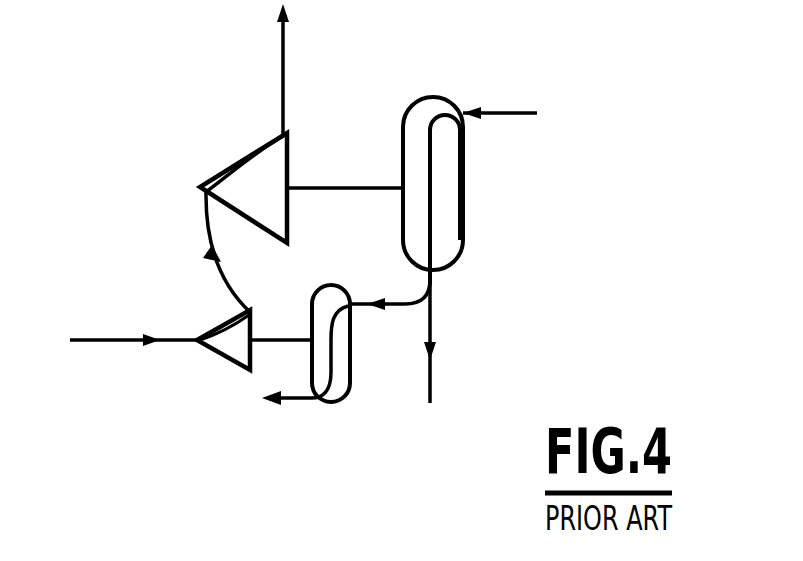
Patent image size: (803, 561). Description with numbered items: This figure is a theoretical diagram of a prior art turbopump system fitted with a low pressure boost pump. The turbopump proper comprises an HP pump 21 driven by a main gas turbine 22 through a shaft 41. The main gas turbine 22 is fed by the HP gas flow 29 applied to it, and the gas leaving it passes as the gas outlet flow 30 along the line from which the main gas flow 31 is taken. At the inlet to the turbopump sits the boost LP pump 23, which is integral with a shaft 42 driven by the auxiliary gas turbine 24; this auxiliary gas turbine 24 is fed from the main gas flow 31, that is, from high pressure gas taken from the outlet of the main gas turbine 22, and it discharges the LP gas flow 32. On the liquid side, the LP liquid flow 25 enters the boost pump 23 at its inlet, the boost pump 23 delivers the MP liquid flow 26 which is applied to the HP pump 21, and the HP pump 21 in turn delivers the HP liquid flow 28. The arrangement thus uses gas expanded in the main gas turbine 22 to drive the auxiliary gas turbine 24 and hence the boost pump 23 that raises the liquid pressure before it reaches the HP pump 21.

The HP pump 21 is at (226, 166).
The main gas turbine 22 is at (450, 208).
The boost LP pump 23 is at (228, 356).
The auxiliary gas turbine 24 is at (347, 375).
The LP liquid flow 25 is at (112, 355).
The MP liquid flow 26 is at (203, 231).
The HP liquid flow 28 is at (283, 57).
The HP gas flow 29 is at (494, 110).
The HP gas outlet line 30 is at (432, 320).
The main gas flow 31 is at (389, 302).
The LP gas flow 32 is at (290, 397).
The shaft 41 is at (347, 186).
The shaft 42 is at (278, 336).